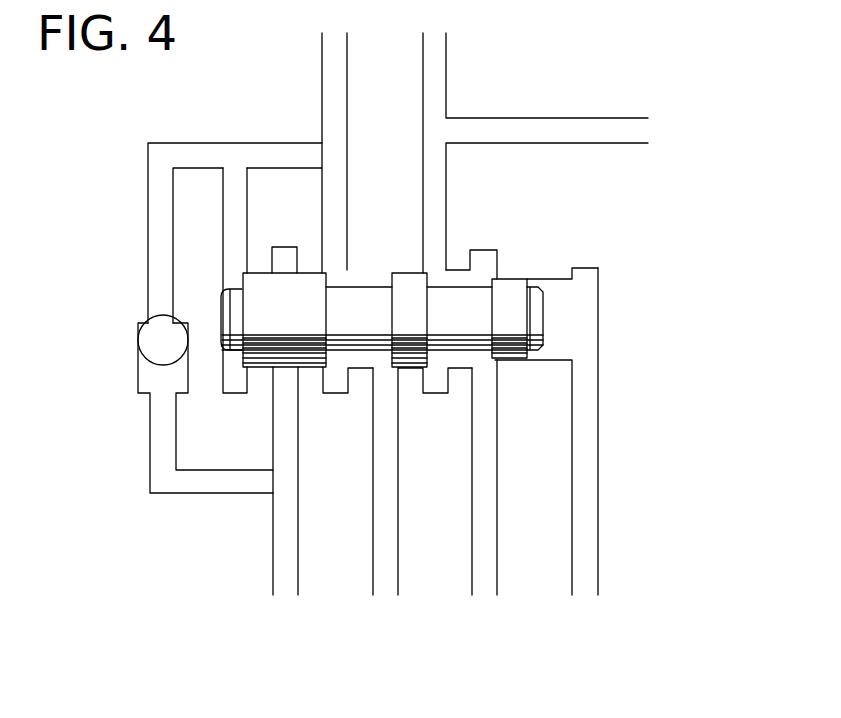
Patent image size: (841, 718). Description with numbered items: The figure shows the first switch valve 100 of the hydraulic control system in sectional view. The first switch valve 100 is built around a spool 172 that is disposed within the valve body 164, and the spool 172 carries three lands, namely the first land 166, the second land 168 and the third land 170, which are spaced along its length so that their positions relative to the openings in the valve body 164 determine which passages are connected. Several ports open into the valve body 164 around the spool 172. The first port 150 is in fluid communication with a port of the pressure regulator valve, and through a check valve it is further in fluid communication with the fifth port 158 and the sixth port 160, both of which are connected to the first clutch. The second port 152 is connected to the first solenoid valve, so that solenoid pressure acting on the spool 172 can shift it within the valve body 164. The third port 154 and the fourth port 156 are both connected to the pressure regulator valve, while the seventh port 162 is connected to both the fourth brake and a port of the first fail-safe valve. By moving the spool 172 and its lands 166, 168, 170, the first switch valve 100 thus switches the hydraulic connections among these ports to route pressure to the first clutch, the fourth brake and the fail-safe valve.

The first switch valve 100 is at (622, 327).
The first port 150 is at (283, 380).
The second port 152 is at (387, 378).
The third port 154 is at (485, 380).
The fourth port 156 is at (587, 372).
The fifth port 158 is at (233, 260).
The sixth port 160 is at (335, 261).
The seventh port 162 is at (435, 258).
The valve body 164 is at (562, 262).
The first land 166 is at (265, 352).
The second land 168 is at (412, 287).
The third land 170 is at (512, 300).
The spool 172 is at (555, 314).